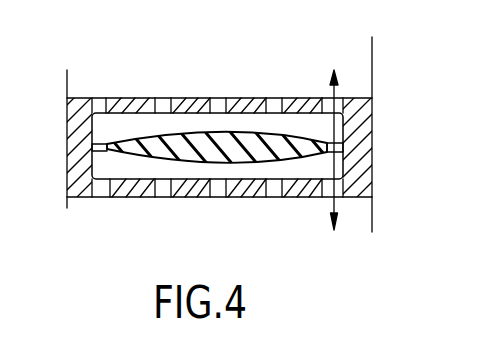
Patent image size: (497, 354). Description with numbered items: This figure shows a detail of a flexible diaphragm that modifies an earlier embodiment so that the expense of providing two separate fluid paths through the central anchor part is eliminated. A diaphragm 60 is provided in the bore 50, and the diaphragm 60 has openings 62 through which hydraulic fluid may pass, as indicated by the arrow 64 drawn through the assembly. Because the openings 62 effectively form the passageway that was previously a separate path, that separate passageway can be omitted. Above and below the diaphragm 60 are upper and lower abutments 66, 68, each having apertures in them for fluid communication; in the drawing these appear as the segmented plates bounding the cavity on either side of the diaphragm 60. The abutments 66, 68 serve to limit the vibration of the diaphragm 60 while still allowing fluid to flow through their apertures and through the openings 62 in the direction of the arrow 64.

The bore 50 is at (222, 68).
The diaphragm 60 is at (262, 152).
The openings 62 is at (98, 147).
The arrow 64 is at (334, 92).
The upper abutment 66 is at (253, 98).
The lower abutment 68 is at (143, 197).